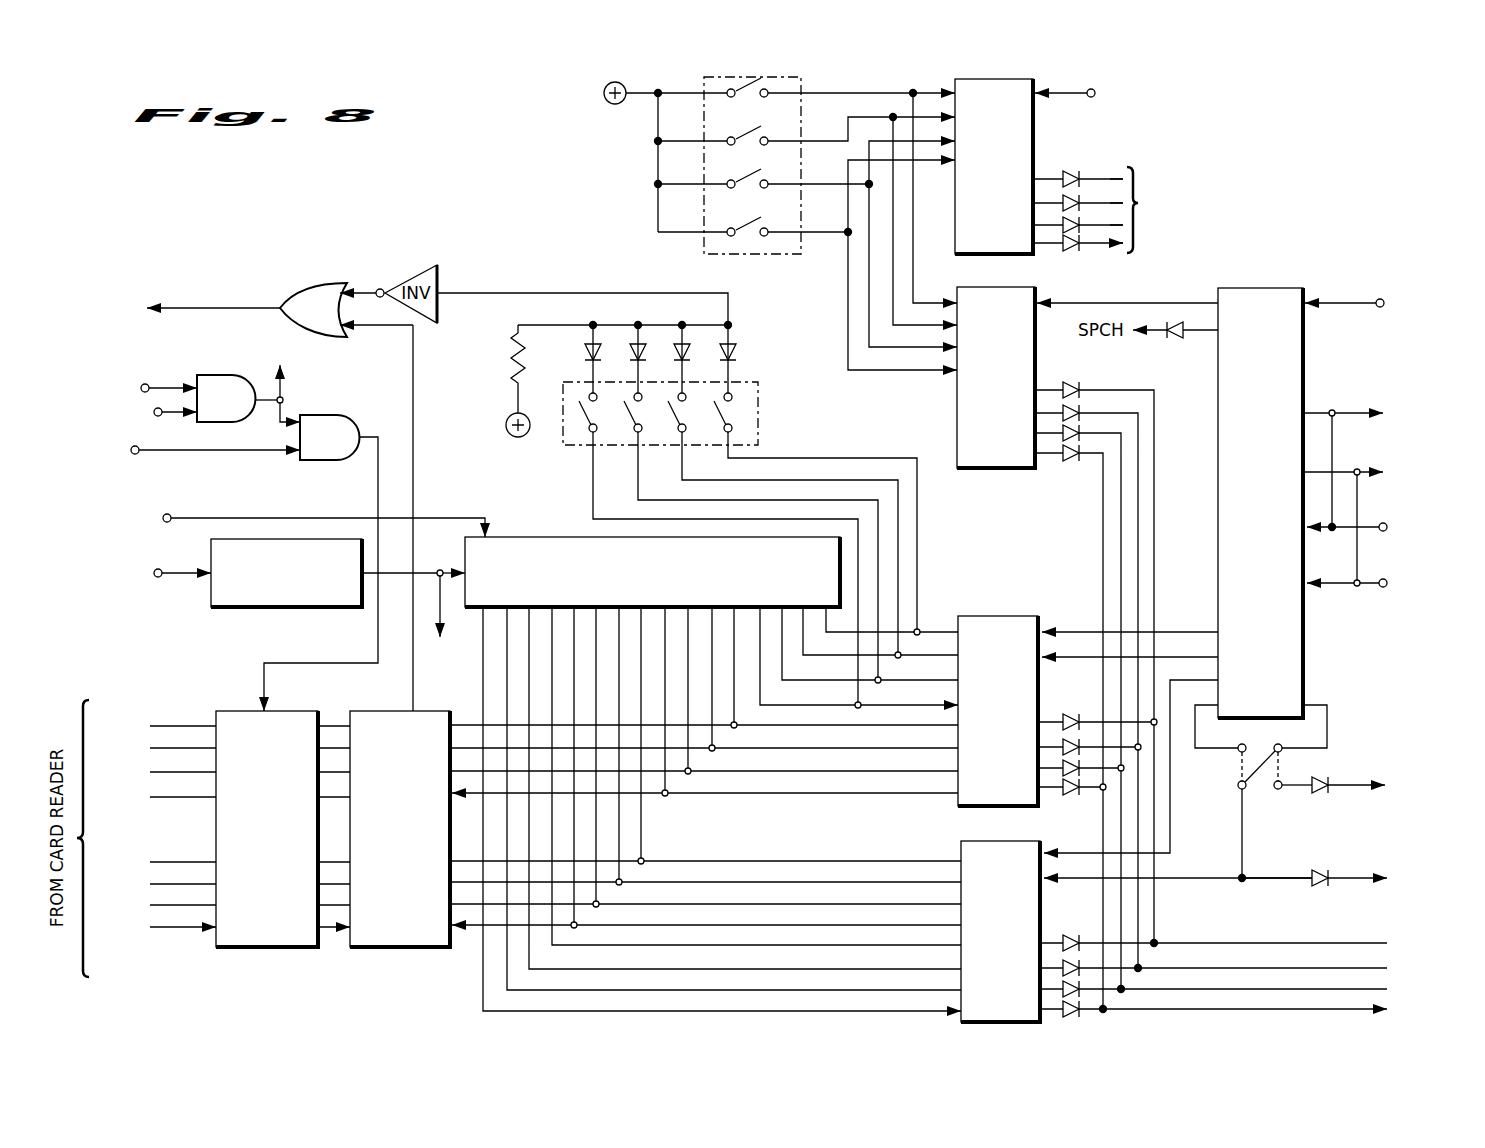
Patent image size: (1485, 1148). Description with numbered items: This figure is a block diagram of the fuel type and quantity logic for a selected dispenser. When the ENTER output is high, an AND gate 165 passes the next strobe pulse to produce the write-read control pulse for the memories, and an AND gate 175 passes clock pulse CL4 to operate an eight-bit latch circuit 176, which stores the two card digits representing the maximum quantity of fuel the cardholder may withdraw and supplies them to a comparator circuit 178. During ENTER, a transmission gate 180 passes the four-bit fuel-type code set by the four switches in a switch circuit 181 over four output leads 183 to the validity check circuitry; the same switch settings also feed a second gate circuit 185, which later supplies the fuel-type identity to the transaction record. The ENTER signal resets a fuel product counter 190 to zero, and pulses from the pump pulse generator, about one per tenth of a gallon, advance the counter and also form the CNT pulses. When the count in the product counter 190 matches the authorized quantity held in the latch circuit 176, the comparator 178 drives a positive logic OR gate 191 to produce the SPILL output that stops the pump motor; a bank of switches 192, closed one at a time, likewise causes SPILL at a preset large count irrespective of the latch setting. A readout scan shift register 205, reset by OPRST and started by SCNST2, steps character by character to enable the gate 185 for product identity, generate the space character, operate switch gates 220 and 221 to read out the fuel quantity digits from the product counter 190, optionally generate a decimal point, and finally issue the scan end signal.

The AND gate 165 is at (243, 376).
The AND gate 175 is at (348, 414).
The eight-bit latch circuit 176 is at (277, 950).
The comparator circuit 178 is at (397, 950).
The transmission gate 180 is at (1035, 131).
The switch circuit 181 is at (775, 250).
The output leads 183 is at (1146, 162).
The second gate circuit 185 is at (992, 472).
The fuel product counter 190 is at (568, 536).
The OR gate 191 is at (313, 283).
The bank of switches 192 is at (758, 390).
The readout scan shift register 205 is at (1265, 288).
The switch gate 220 is at (996, 616).
The switch gate 221 is at (999, 842).